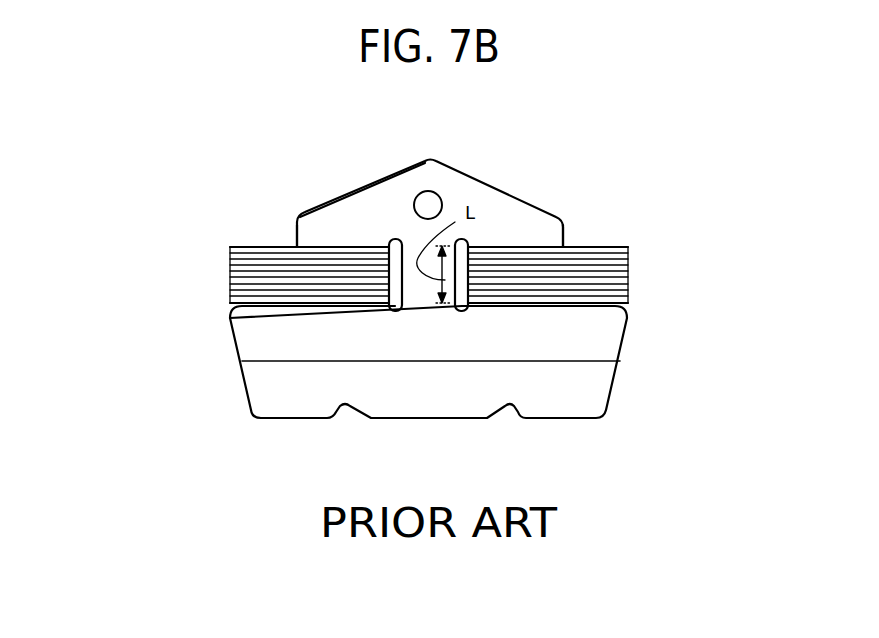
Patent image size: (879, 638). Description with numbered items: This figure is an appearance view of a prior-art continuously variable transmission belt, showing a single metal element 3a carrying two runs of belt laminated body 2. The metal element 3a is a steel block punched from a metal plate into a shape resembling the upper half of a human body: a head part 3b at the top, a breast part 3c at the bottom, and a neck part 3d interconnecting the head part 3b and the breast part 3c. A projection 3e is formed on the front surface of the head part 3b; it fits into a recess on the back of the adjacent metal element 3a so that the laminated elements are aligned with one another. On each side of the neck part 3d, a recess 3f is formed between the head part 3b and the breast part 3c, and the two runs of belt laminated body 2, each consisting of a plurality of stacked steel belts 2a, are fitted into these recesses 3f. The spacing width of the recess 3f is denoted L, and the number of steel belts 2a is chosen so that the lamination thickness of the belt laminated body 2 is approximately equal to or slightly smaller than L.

The belt laminated body 2 is at (428, 282).
The steel belt 2a is at (230, 250).
The metal element 3a is at (522, 183).
The head part 3b is at (378, 203).
The breast part 3c is at (322, 405).
The neck part 3d is at (417, 286).
The projection 3e is at (431, 200).
The recess 3f is at (283, 238).